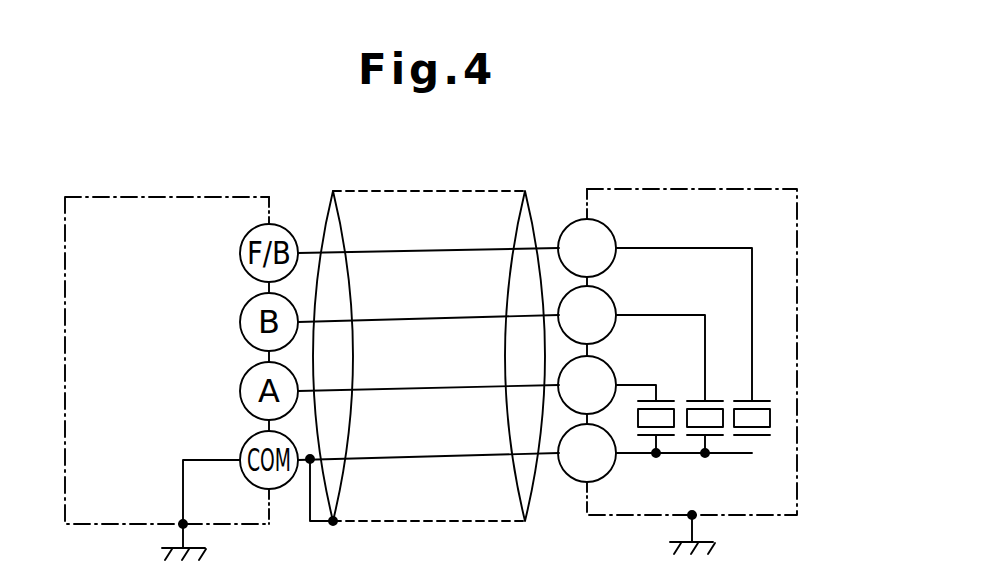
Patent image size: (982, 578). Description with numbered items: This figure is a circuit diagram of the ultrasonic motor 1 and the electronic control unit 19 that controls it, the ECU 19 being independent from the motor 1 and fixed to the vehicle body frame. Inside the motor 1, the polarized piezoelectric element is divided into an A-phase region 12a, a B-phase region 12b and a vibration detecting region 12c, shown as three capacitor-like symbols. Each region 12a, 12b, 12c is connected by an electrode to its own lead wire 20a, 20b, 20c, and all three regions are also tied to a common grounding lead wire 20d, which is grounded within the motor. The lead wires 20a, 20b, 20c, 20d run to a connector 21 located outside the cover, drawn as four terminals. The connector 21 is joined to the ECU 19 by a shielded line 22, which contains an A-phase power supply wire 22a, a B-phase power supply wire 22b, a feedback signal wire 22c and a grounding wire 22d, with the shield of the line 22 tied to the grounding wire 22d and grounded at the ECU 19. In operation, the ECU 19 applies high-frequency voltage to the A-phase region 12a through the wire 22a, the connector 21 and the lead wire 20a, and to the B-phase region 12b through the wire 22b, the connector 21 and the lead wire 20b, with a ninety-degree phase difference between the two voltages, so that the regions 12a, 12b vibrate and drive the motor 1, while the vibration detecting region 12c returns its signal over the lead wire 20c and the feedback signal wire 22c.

The ultrasonic motor 1 is at (770, 186).
The electronic control unit 19 is at (125, 196).
The connector 21 is at (569, 210).
The shielded line 22 is at (367, 190).
The A-phase power supply wire 22a is at (417, 390).
The B-phase power supply wire 22b is at (417, 321).
The feedback signal wire 22c is at (417, 252).
The grounding wire 22d is at (417, 459).
The lead wire 20a is at (632, 385).
The lead wire 20b is at (682, 314).
The lead wire 20c is at (728, 245).
The common grounding lead wire 20d is at (632, 455).
The A-phase region 12a is at (667, 420).
The B-phase region 12b is at (715, 424).
The vibration detecting region 12c is at (764, 424).